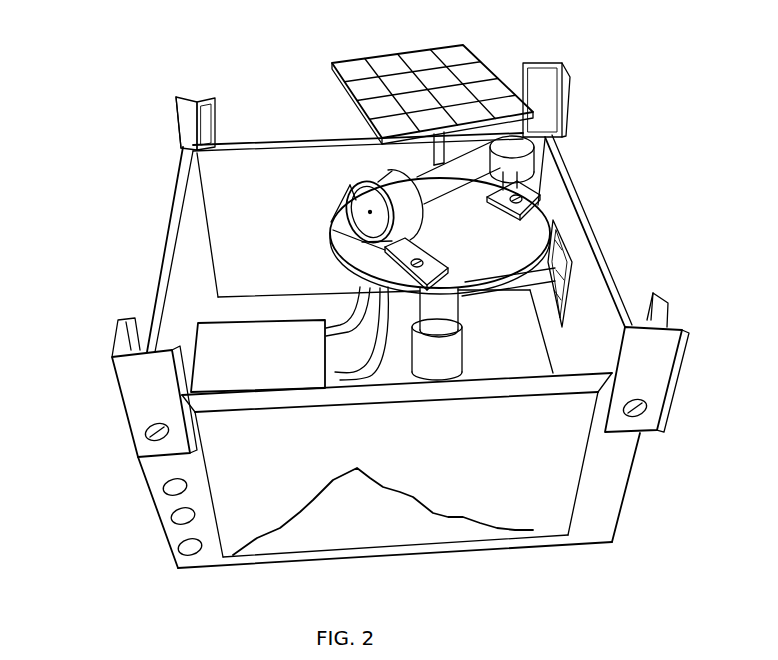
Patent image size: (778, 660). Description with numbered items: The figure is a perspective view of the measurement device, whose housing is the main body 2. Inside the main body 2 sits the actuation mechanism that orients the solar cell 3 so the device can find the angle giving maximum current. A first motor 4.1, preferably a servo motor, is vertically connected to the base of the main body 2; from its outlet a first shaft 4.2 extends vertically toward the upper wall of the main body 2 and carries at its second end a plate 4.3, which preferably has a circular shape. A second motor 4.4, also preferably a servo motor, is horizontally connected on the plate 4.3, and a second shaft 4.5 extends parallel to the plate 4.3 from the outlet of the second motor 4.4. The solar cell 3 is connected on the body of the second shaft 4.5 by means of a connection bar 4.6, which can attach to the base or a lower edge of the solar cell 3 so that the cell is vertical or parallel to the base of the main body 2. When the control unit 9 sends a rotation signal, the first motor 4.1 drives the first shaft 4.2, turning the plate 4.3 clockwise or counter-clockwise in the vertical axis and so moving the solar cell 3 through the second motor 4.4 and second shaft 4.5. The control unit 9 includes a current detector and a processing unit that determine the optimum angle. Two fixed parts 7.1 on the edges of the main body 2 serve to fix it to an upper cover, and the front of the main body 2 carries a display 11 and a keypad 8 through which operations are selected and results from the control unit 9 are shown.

The main body 2 is at (603, 250).
The solar cell 3 is at (470, 54).
The first motor 4.1 is at (462, 352).
The first shaft 4.2 is at (462, 313).
The plate 4.3 is at (547, 210).
The second motor 4.4 is at (350, 193).
The second shaft 4.5 is at (447, 205).
The connection bar 4.6 is at (430, 151).
The fixed parts 7.1 is at (110, 400).
The keypad 8 is at (158, 492).
The control unit 9 is at (274, 320).
The display 11 is at (578, 495).